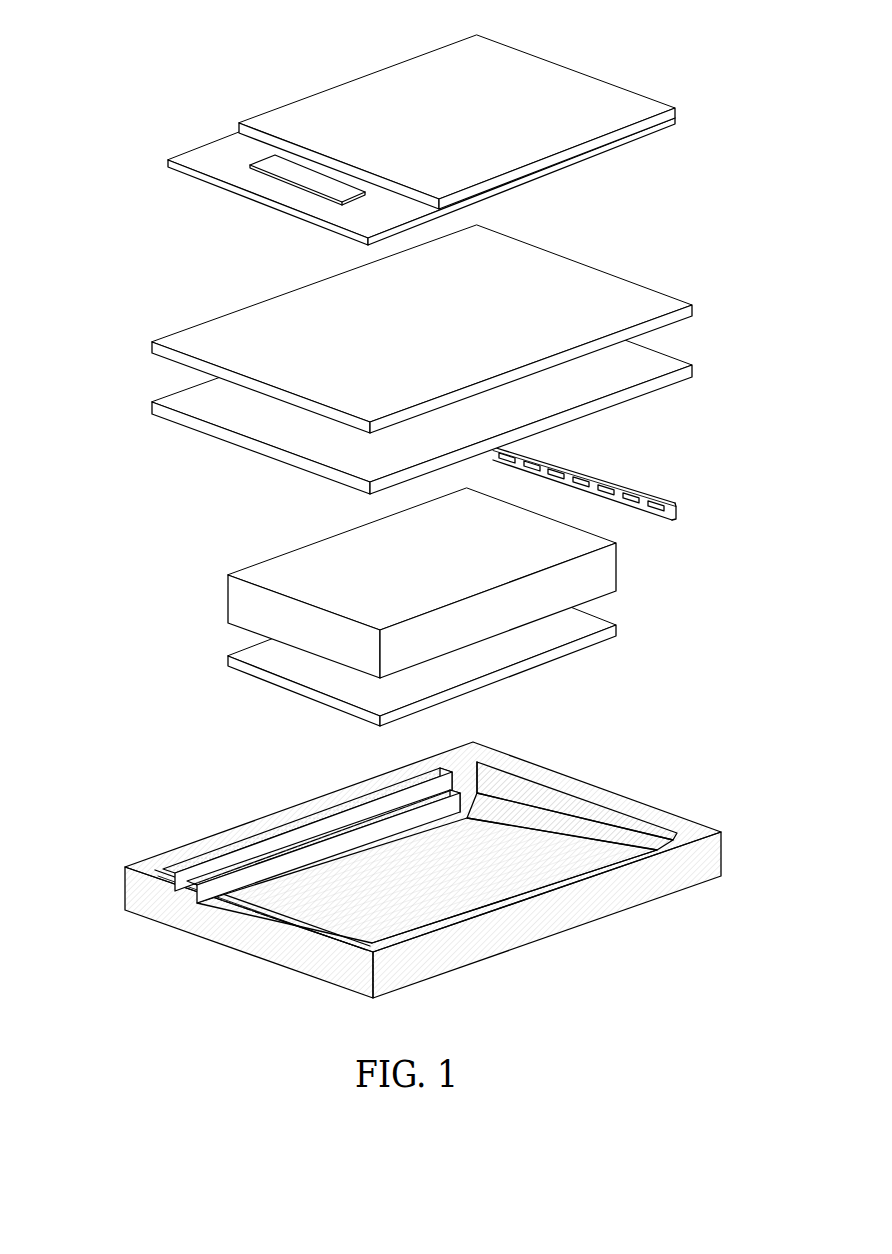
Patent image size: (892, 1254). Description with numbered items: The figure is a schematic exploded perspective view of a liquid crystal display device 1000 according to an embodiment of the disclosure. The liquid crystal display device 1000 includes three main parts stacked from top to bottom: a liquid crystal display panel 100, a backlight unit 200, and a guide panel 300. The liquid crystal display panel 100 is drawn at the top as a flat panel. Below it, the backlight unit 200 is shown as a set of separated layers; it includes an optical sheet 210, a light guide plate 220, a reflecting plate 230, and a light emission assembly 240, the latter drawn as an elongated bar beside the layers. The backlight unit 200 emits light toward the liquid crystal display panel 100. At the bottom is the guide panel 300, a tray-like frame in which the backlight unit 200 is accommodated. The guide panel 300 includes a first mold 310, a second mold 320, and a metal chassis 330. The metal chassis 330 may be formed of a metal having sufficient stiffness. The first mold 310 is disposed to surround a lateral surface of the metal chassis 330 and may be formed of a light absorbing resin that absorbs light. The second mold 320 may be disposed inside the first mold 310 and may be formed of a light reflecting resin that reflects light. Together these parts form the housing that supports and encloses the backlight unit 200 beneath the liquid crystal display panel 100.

The liquid crystal display device 1000 is at (706, 21).
The liquid crystal display panel 100 is at (662, 87).
The backlight unit 200 is at (760, 335).
The optical sheet 210 is at (692, 310).
The light guide plate 220 is at (607, 572).
The reflecting plate 230 is at (618, 627).
The light emission assembly 240 is at (672, 500).
The guide panel 300 is at (394, 870).
The first mold 310 is at (147, 866).
The second mold 320 is at (242, 867).
The metal chassis 330 is at (300, 897).